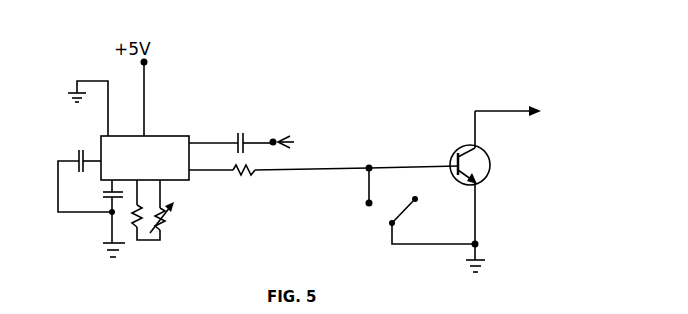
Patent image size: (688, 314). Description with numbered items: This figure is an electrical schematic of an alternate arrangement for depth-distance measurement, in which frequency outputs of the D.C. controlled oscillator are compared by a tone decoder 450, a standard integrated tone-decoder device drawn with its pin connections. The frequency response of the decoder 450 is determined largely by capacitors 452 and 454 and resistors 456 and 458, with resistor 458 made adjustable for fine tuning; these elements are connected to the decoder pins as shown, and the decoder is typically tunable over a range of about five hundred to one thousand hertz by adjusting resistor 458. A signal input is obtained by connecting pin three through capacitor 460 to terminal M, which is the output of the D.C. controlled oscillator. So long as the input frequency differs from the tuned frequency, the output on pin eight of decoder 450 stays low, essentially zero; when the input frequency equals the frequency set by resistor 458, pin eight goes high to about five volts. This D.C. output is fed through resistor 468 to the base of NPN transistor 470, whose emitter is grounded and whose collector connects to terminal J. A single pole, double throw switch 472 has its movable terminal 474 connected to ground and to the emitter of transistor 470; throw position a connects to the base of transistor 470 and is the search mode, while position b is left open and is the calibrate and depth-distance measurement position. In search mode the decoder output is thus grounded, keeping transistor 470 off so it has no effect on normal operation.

The tone decoder 450 is at (155, 147).
The capacitor 452 is at (79, 154).
The capacitor 454 is at (104, 194).
The resistor 456 is at (139, 233).
The resistor 458 is at (171, 220).
The capacitor 460 is at (253, 131).
The resistor 468 is at (248, 176).
The NPN transistor 470 is at (490, 166).
The single pole, double throw switch 472 is at (376, 238).
The movable terminal 474 is at (402, 217).